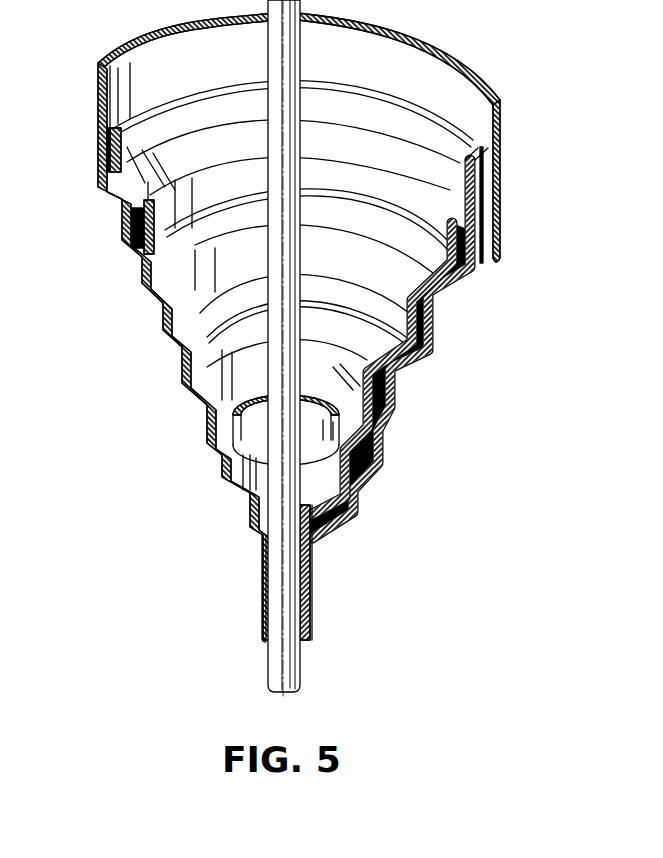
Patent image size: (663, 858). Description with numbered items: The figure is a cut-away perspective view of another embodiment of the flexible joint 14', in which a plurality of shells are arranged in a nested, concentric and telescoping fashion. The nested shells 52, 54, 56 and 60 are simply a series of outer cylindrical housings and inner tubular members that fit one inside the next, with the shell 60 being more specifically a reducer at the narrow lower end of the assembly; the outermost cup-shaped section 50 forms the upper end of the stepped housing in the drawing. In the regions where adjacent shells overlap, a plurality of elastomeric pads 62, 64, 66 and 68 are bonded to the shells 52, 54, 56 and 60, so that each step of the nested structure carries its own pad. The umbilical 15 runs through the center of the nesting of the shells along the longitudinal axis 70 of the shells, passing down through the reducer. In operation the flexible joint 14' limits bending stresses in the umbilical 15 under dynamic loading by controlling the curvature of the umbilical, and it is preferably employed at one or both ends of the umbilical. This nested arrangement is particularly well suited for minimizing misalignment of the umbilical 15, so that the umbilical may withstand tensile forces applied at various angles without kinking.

The flexible joint 14' is at (343, 326).
The umbilical 15 is at (300, 672).
The first stepped wall section 50 is at (98, 152).
The shell 52 is at (150, 300).
The shell 54 is at (185, 395).
The shell 56 is at (230, 487).
The shell (reducer) 60 is at (265, 550).
The elastomeric pad 62 is at (118, 204).
The elastomeric pad 64 is at (165, 335).
The elastomeric pad 66 is at (205, 428).
The elastomeric pad 68 is at (240, 497).
The longitudinal axis 70 is at (372, 392).